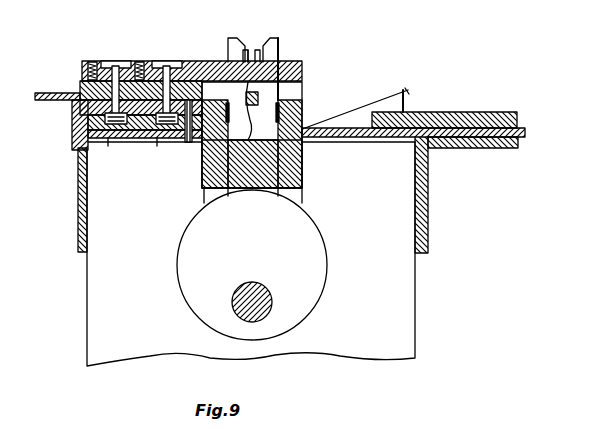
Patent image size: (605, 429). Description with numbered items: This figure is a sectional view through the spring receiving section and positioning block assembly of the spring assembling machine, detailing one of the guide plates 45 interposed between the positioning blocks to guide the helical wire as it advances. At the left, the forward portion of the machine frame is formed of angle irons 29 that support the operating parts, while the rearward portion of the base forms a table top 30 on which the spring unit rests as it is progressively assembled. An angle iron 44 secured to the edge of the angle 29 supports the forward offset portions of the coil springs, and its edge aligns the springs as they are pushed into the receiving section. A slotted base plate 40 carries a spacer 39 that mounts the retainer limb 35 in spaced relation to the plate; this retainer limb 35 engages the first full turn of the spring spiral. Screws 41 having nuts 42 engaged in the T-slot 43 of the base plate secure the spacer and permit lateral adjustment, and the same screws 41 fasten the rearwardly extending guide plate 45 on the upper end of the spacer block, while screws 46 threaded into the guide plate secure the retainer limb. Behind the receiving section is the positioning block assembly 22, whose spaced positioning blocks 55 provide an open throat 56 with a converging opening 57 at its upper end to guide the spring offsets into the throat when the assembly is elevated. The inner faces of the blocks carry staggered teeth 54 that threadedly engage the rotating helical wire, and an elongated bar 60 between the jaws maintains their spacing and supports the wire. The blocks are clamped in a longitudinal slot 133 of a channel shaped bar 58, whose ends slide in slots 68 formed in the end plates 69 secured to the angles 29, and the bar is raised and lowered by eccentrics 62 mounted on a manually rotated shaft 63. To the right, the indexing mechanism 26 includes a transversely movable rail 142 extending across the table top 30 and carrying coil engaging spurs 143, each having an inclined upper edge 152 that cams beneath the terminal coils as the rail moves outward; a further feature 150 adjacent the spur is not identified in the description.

The positioning block assembly 22 is at (281, 37).
The indexing mechanism 26 is at (410, 91).
The angle irons 29 is at (78, 220).
The table top 30 is at (485, 138).
The retainer limb 35 is at (117, 61).
The spacer 39 is at (82, 88).
The slotted base plate 40 is at (73, 116).
The screws 41 is at (168, 61).
The nuts 42 is at (186, 142).
The T-slot 43 is at (108, 142).
The angle iron 44 is at (36, 100).
The guide plates 45 is at (305, 73).
The screws 46 is at (91, 61).
The teeth 54 is at (280, 47).
The positioning blocks 55 is at (228, 50).
The open throat 56 is at (248, 50).
The converging opening 57 is at (262, 50).
The channel shaped bar 58 is at (305, 161).
The elongated bar 60 is at (259, 97).
The eccentrics 62 is at (318, 288).
The shaft 63 is at (262, 285).
The slots 68 is at (203, 196).
The end plates 69 is at (417, 308).
The longitudinal slot 133 is at (304, 117).
The rail 142 is at (505, 118).
The spurs 143 is at (406, 88).
The arm 150 is at (408, 97).
The inclined upper edge 152 is at (362, 107).